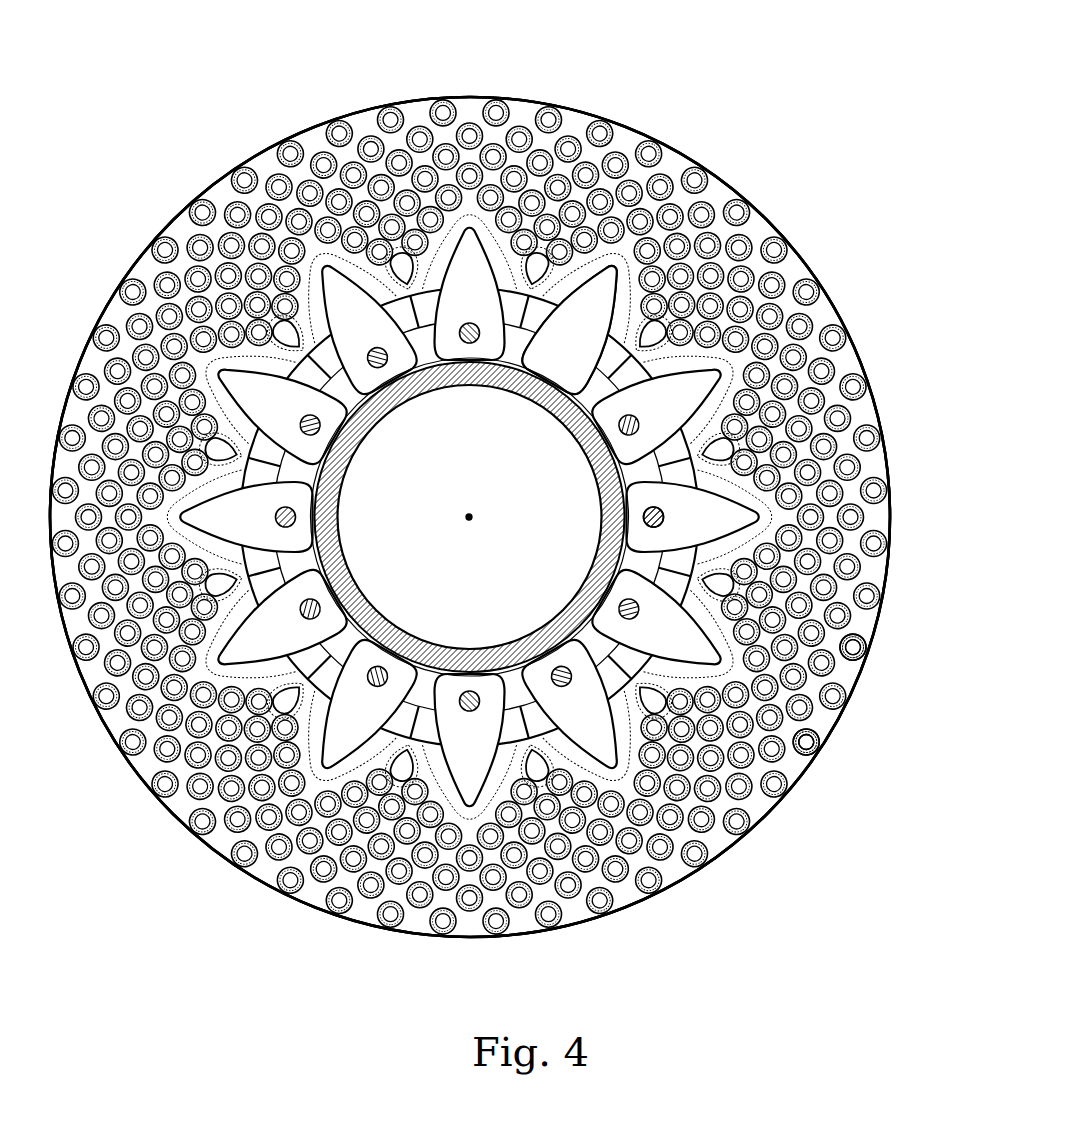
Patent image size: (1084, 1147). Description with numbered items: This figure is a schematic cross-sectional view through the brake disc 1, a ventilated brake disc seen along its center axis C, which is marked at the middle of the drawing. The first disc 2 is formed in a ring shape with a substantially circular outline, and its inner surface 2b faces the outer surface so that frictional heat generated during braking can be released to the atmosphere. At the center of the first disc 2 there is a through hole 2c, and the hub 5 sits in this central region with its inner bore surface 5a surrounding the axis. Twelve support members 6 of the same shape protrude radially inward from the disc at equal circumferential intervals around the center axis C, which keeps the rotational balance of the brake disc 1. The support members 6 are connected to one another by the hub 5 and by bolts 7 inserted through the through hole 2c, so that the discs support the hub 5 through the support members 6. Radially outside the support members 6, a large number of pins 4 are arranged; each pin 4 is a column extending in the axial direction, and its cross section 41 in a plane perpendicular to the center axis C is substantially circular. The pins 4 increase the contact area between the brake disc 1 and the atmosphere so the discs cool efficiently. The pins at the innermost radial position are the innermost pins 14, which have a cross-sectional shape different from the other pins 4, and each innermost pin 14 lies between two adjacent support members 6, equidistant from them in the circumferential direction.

The brake disc 1 is at (718, 110).
The first disc 2 is at (866, 362).
The inner surface 2b is at (872, 410).
The through hole 2c is at (509, 342).
The pins 4 is at (821, 728).
The cross section 41 is at (805, 748).
The hub 5 is at (343, 510).
The inner peripheral surface 5a is at (340, 553).
The support members 6 is at (587, 347).
The bolts 7 is at (641, 516).
The innermost pins 14 is at (853, 645).
The center axis C is at (469, 514).